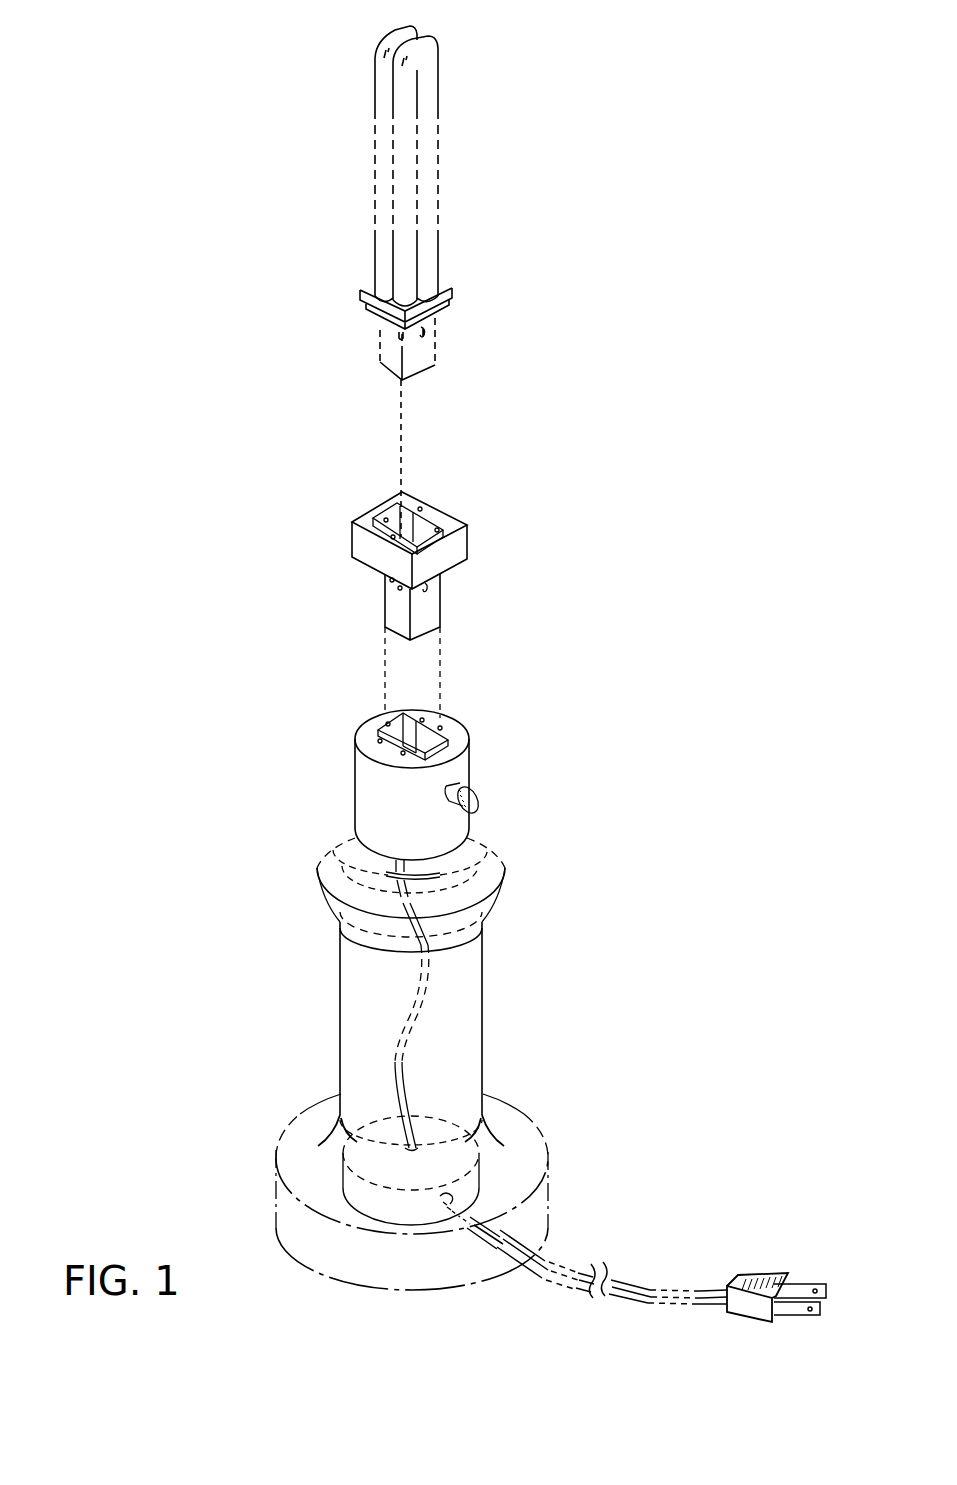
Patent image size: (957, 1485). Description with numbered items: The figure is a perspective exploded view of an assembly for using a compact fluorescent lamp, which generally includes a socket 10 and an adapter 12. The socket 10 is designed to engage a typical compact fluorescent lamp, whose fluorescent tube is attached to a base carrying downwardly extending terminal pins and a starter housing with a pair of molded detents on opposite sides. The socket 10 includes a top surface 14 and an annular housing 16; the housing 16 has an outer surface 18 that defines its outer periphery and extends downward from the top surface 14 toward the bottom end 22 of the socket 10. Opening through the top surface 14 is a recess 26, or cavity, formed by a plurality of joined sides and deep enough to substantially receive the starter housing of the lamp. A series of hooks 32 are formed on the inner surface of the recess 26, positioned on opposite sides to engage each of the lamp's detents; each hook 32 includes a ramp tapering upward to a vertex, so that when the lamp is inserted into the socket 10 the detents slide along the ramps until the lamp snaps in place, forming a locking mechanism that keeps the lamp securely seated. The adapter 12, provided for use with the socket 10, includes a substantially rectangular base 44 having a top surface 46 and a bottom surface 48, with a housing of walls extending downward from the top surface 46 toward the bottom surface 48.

The socket 10 is at (520, 797).
The adapter 12 is at (492, 542).
The top surface 14 is at (452, 725).
The housing 16 is at (472, 762).
The outer surface 18 is at (362, 793).
The bottom end 22 is at (350, 845).
The recess 26 is at (430, 722).
The hooks 32 is at (388, 722).
The base 44 is at (462, 537).
The top surface 46 is at (430, 510).
The bottom surface 48 is at (450, 568).